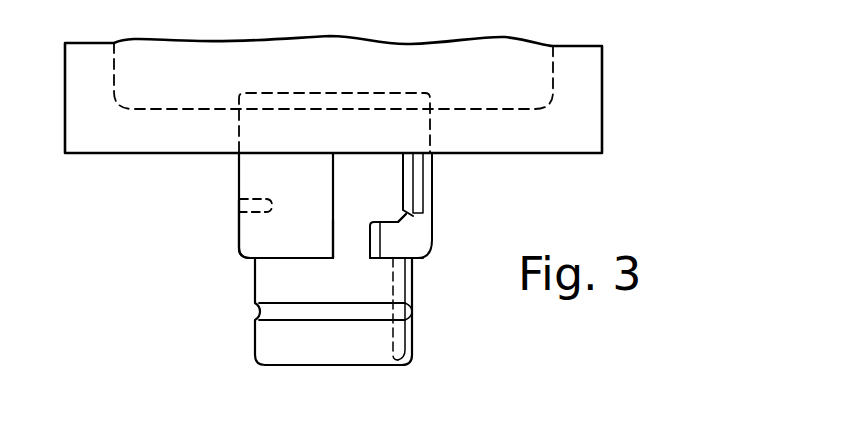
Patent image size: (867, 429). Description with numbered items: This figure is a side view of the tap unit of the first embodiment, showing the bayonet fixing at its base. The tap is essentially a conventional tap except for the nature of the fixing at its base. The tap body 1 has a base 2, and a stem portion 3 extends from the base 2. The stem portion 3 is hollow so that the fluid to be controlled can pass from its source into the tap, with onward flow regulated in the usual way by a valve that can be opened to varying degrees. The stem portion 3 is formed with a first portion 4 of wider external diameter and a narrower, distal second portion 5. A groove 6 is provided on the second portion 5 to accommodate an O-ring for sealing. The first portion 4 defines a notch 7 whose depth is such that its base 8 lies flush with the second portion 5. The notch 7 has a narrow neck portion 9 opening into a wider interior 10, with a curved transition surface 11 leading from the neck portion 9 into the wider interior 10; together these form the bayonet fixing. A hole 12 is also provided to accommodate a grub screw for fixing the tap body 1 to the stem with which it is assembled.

The tap body 1 is at (655, 108).
The base 2 is at (573, 142).
The stem portion 3 is at (268, 177).
The first portion 4 is at (253, 237).
The second portion 5 is at (313, 348).
The groove 6 is at (415, 312).
The notch 7 is at (346, 229).
The base of notch 8 is at (350, 200).
The neck portion 9 is at (347, 247).
The wider interior 10 is at (385, 175).
The curved transition surface 11 is at (390, 222).
The hole 12 is at (240, 208).